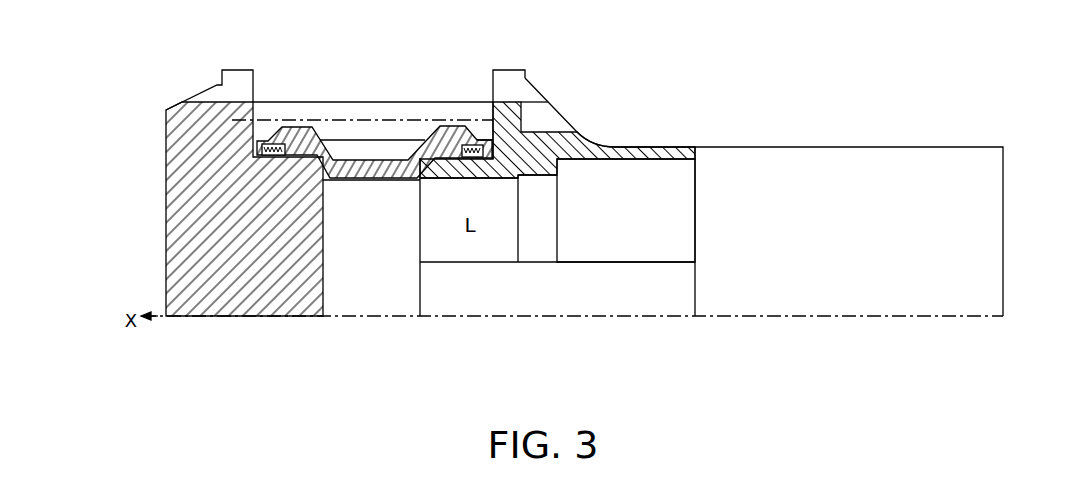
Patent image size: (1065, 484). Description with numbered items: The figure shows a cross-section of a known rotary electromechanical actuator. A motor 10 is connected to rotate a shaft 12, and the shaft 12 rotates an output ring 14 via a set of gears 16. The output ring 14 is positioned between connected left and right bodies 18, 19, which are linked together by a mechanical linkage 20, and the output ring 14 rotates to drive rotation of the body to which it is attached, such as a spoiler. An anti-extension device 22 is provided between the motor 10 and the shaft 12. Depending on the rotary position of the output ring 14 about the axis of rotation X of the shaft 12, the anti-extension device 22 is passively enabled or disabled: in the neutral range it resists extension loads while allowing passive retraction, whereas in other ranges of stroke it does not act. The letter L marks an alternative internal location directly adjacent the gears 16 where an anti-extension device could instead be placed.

The motor 10 is at (883, 162).
The shaft 12 is at (554, 306).
The output ring 14 is at (375, 143).
The set of gears 16 is at (359, 307).
The left body 18 is at (183, 176).
The right body 19 is at (508, 150).
The mechanical linkage 20 is at (458, 112).
The anti-extension device 22 is at (672, 173).